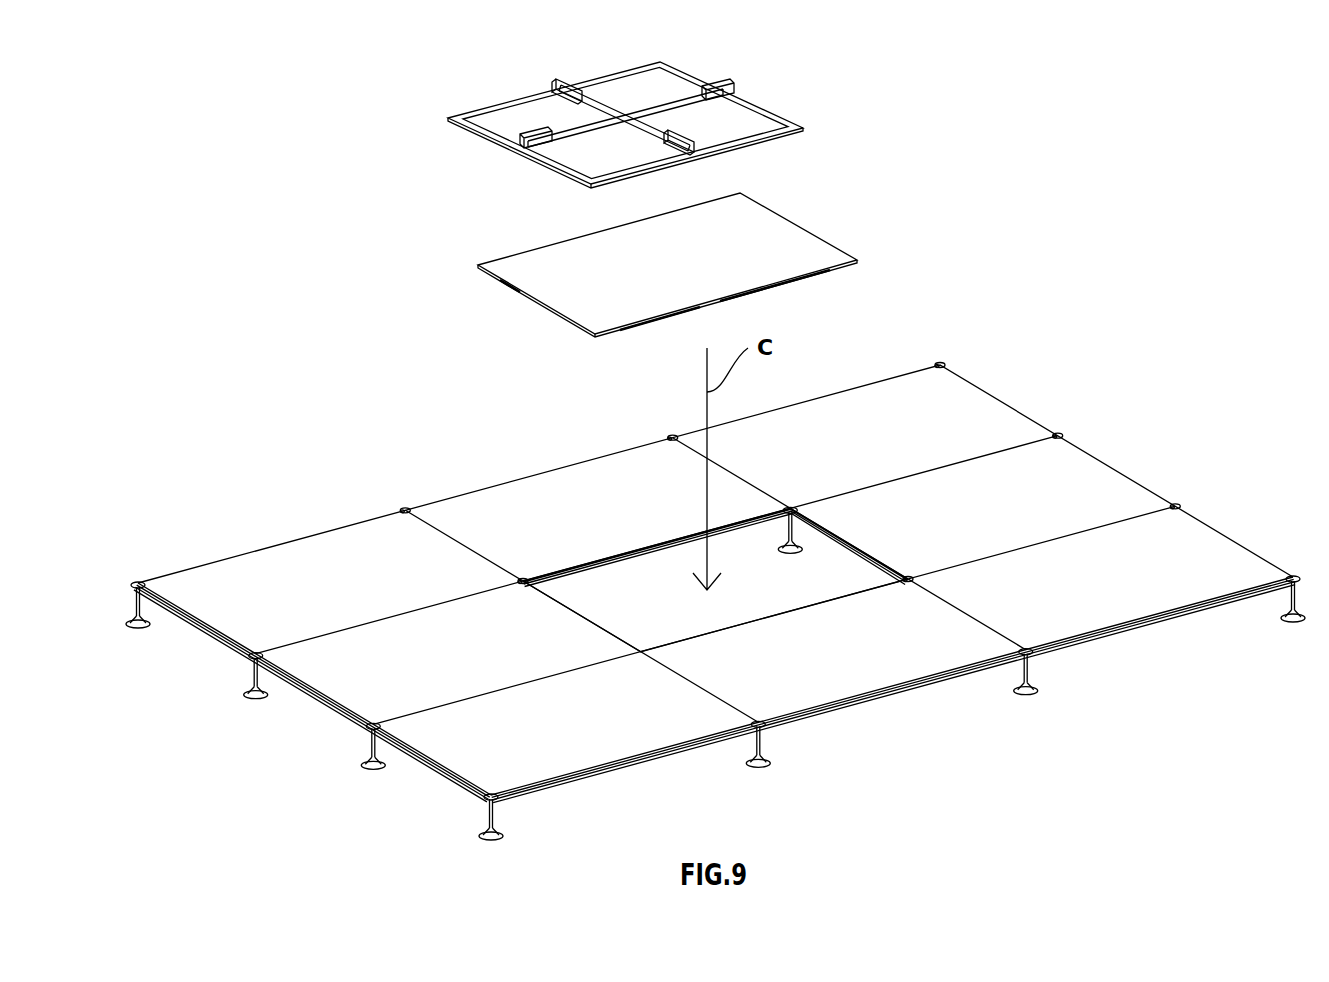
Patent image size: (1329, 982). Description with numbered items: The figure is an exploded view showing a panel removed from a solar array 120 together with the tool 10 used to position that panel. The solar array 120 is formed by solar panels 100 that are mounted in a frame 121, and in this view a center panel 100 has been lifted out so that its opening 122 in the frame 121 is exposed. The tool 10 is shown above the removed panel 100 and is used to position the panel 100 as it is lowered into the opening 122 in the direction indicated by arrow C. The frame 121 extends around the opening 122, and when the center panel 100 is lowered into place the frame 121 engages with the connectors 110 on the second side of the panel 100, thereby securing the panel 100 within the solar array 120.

The tool 10 is at (742, 108).
The panel 100 is at (578, 288).
The connectors 110 is at (732, 300).
The solar array 120 is at (715, 602).
The frame 121 is at (832, 533).
The opening 122 is at (630, 597).